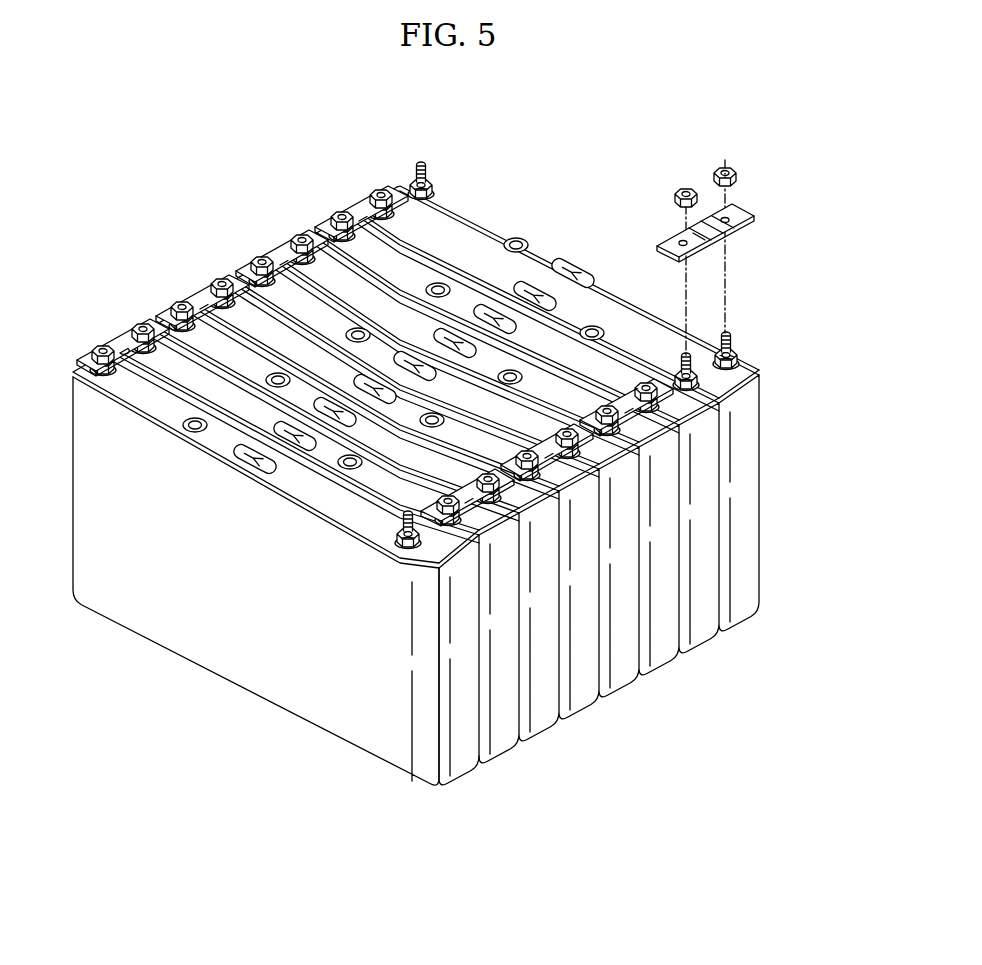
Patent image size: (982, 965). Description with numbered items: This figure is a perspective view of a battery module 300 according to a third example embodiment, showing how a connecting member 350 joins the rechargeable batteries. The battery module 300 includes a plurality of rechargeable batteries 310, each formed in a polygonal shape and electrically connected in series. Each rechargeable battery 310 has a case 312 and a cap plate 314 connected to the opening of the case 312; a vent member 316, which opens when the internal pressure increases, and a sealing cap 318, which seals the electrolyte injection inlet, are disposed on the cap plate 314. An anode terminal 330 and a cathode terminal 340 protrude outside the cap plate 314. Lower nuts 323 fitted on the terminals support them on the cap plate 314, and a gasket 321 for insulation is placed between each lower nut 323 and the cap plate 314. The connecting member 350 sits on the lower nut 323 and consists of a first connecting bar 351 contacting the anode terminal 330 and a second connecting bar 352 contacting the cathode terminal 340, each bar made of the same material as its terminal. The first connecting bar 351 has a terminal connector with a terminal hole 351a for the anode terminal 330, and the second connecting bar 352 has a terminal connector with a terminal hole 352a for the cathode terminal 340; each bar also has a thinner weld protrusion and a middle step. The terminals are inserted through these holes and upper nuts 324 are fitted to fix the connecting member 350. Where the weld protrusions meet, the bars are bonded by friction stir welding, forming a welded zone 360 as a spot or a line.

The battery module 300 is at (235, 237).
The rechargeable battery 310 is at (436, 792).
The case 312 is at (352, 735).
The cap plate 314 is at (313, 490).
The vent member 316 is at (250, 468).
The sealing cap 318 is at (188, 428).
The gasket 321 is at (760, 368).
The lower nut 323 is at (737, 360).
The upper nut 324 is at (731, 168).
The anode terminal 330 is at (424, 167).
The cathode terminal 340 is at (733, 346).
The connecting member 350 is at (748, 206).
The first connecting bar 351 is at (702, 259).
The terminal hole 351a is at (681, 243).
The second connecting bar 352 is at (746, 225).
The terminal hole 352a is at (723, 214).
The welded zone 360 is at (713, 237).